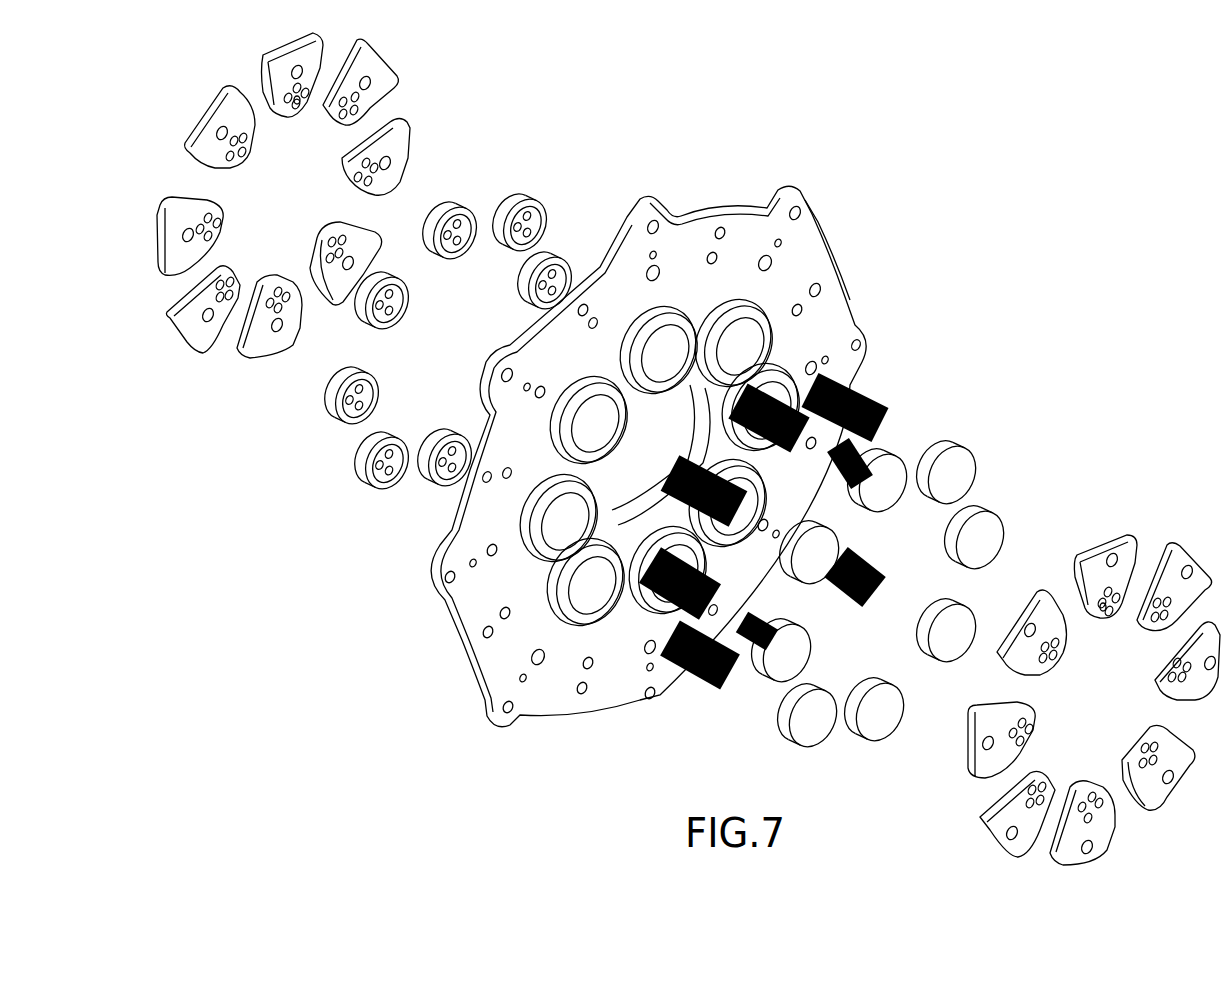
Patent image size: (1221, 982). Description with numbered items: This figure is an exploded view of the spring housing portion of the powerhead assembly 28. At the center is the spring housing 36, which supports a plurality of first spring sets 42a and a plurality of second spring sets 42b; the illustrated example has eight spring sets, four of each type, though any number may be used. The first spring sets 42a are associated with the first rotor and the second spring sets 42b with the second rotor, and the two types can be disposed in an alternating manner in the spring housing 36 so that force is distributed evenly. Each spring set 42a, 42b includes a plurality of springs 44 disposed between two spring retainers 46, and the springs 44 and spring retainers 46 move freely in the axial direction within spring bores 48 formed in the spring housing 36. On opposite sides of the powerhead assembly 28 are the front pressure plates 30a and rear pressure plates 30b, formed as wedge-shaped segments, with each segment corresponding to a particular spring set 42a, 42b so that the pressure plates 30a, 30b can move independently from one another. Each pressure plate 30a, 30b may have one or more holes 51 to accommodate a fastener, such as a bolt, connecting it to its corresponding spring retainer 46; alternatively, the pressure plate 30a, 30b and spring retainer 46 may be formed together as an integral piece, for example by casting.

The powerhead assembly 28 is at (888, 283).
The front pressure plate 30a is at (1130, 548).
The rear pressure plate 30b is at (385, 78).
The spring housing 36 is at (818, 254).
The first spring set 42a is at (972, 440).
The second spring set 42b is at (1011, 509).
The spring 44 is at (880, 400).
The spring retainer 46 is at (524, 200).
The spring bore 48 is at (735, 303).
The hole 51 is at (296, 104).